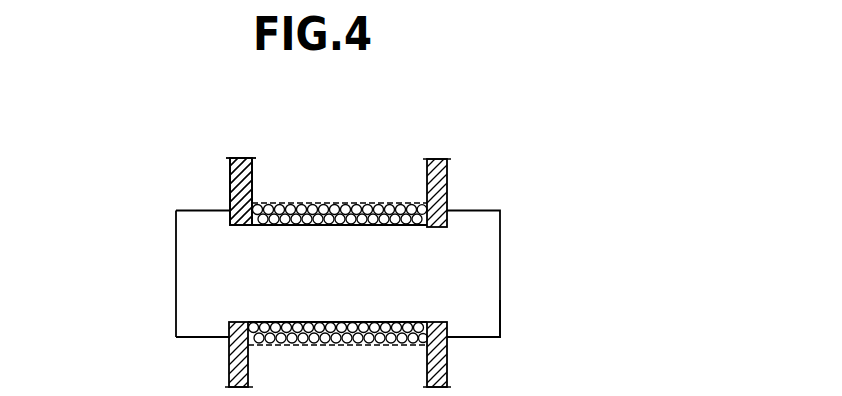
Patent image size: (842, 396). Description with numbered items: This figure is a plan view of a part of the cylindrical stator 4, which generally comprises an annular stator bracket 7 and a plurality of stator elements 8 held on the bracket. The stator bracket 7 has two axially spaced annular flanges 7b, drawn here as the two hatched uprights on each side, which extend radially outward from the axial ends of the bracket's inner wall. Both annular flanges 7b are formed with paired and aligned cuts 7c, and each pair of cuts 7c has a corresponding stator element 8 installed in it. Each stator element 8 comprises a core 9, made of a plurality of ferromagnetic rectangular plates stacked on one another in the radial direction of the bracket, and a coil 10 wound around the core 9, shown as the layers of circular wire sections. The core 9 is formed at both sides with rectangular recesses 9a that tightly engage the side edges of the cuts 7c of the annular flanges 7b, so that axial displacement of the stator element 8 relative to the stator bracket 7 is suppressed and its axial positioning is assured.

The stator 4 is at (470, 112).
The stator bracket 7 is at (227, 180).
The annular flanges 7b is at (242, 158).
The cuts 7c is at (237, 321).
The stator element 8 is at (176, 240).
The core 9 is at (176, 290).
The rectangular recesses 9a is at (448, 322).
The coil 10 is at (350, 203).